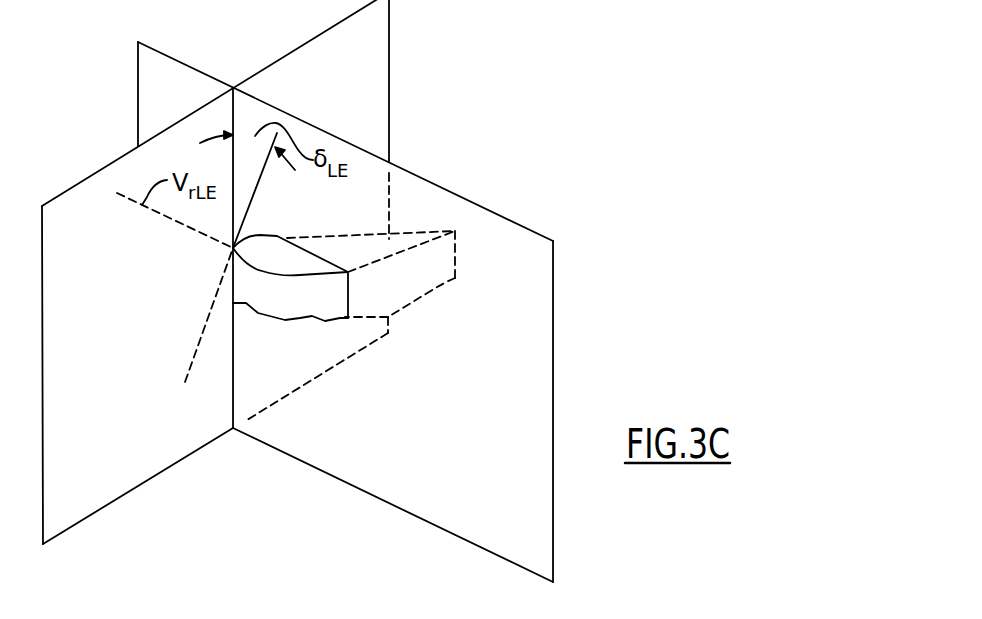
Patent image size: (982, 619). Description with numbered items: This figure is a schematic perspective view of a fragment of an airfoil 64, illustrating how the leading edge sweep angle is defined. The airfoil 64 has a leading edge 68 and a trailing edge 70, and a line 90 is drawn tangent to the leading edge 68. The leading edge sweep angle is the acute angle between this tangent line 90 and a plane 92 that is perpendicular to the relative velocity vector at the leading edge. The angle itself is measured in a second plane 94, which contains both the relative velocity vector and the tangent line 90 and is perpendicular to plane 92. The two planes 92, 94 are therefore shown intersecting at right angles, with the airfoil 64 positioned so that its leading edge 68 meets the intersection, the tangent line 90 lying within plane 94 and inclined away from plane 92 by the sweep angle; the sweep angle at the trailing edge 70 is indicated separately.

The plane 92 is at (370, 33).
The plane 94 is at (532, 278).
The airfoil 64 is at (313, 310).
The trailing edge 70 is at (462, 247).
The line 90 is at (250, 206).
The leading edge 68 is at (217, 291).